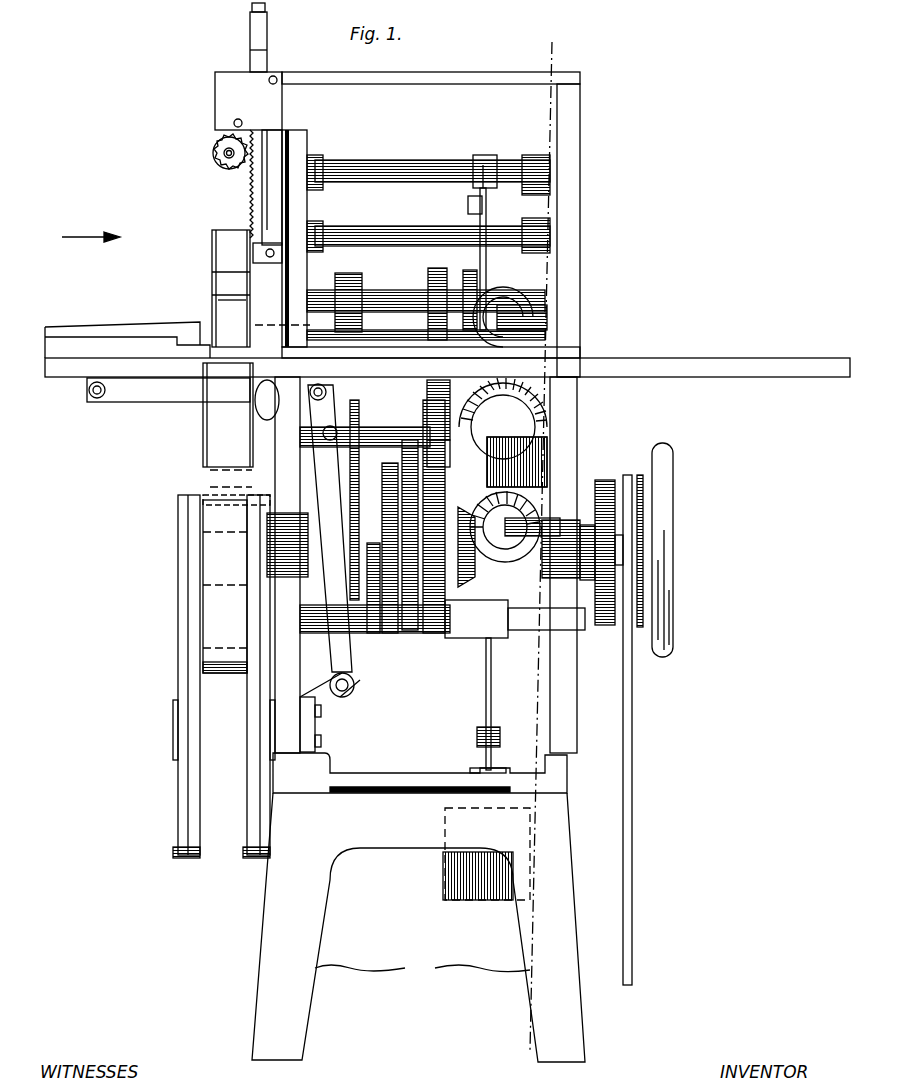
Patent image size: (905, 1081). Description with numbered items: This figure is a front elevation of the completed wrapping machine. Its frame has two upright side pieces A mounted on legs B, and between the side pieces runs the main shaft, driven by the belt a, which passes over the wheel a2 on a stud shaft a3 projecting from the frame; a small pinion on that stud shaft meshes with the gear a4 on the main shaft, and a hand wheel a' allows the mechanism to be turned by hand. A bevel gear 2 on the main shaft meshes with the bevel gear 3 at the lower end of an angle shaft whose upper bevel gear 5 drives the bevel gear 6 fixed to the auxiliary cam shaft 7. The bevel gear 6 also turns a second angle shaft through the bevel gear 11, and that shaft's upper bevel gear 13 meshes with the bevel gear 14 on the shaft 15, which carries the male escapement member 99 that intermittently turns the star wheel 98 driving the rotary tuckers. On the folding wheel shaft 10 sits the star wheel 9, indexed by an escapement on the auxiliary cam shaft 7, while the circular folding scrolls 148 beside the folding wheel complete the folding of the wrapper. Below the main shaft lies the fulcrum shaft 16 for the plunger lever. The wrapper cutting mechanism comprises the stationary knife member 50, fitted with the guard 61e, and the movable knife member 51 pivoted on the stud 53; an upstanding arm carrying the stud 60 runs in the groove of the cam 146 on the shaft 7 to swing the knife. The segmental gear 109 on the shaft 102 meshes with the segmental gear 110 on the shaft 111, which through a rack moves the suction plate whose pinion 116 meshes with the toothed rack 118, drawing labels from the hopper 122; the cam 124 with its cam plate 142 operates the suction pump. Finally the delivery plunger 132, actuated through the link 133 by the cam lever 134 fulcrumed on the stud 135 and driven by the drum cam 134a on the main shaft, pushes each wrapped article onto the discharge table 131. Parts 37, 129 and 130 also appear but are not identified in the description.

The bevel gear 2 is at (470, 582).
The bevel gear 3 is at (505, 528).
The bevel gear 5 is at (545, 412).
The bevel gear 6 is at (495, 390).
The auxiliary cam shaft 7 is at (522, 512).
The star wheel 9 is at (437, 268).
The folding wheel shaft 10 is at (378, 338).
The bevel gear 11 is at (545, 388).
The bevel gear 13 is at (512, 300).
The bevel gear 14 is at (452, 294).
The shaft 15 is at (395, 300).
The fulcrum shaft 16 is at (532, 636).
The cam 37 is at (262, 402).
The stationary knife member 50 is at (215, 505).
The movable knife member 51 is at (217, 481).
The stud 53 is at (347, 470).
The stud 60 is at (345, 432).
The guard 61e is at (222, 257).
The star wheel 98 is at (352, 388).
The male escapement member 99 is at (342, 287).
The shaft 102 is at (388, 233).
The segmental gear 109 is at (546, 220).
The segmental gear 110 is at (546, 187).
The shaft 111 is at (412, 168).
The pinion 116 is at (223, 164).
The toothed rack 118 is at (244, 196).
The magazine or hopper 122 is at (230, 103).
The cam 124 is at (442, 640).
The rod 129 is at (487, 220).
The block 130 is at (490, 155).
The discharge table 131 is at (447, 386).
The delivery plunger 132 is at (78, 337).
The link 133 is at (130, 400).
The cam lever 134 is at (347, 675).
The drum cam 134a is at (305, 530).
The stud 135 is at (340, 712).
The cam plate 142 is at (445, 508).
The cam 146 is at (359, 412).
The circular folding scroll 148 is at (246, 300).
The side piece A is at (296, 104).
The legs B is at (418, 907).
The belt a is at (641, 730).
The hand wheel a' is at (677, 550).
The wheel a2 is at (640, 440).
The stud shaft a3 is at (650, 480).
The gear a4 is at (605, 628).